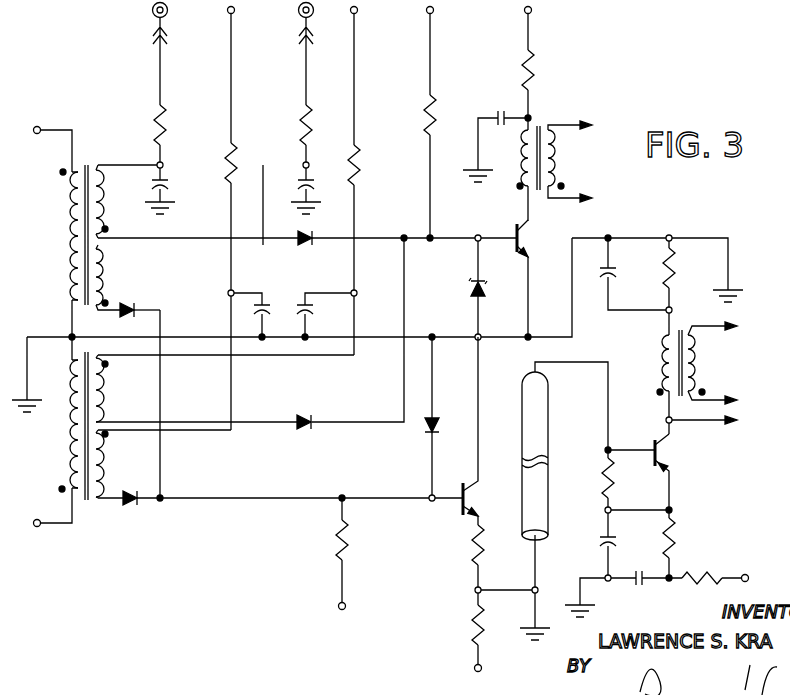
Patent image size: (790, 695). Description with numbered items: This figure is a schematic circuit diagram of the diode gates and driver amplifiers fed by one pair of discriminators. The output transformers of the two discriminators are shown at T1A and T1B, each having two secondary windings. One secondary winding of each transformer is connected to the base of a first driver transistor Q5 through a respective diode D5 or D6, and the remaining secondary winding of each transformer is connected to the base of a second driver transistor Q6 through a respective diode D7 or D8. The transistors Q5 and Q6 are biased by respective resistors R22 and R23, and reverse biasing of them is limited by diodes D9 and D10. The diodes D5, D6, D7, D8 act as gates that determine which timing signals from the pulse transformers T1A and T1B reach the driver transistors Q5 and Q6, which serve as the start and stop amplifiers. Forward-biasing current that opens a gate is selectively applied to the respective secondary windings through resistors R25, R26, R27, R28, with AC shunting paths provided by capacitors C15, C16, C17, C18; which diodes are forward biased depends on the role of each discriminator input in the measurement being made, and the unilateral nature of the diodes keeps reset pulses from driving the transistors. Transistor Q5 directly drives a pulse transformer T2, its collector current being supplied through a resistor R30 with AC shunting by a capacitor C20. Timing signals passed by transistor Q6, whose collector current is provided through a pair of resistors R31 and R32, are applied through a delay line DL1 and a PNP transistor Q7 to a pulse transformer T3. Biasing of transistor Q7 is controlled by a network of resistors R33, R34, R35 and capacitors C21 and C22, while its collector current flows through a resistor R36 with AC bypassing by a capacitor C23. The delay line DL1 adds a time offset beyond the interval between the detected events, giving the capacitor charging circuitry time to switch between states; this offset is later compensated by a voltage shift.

The output transformer T1A is at (84, 166).
The output transformer T1B is at (86, 495).
The pulse transformer T2 is at (543, 136).
The pulse transformer T3 is at (682, 335).
The resistor R22 is at (426, 112).
The resistor R23 is at (337, 550).
The resistor R25 is at (160, 112).
The resistor R26 is at (382, 134).
The resistor R27 is at (304, 110).
The resistor R28 is at (258, 134).
The resistor R30 is at (524, 74).
The resistor R31 is at (474, 550).
The resistor R32 is at (475, 627).
The resistor R33 is at (748, 569).
The resistor R34 is at (671, 548).
The resistor R35 is at (603, 496).
The resistor R36 is at (672, 295).
The capacitor C15 is at (151, 183).
The capacitor C16 is at (302, 300).
The capacitor C17 is at (310, 174).
The capacitor C18 is at (278, 278).
The capacitor C20 is at (498, 127).
The capacitor C21 is at (602, 540).
The capacitor C22 is at (638, 576).
The capacitor C23 is at (614, 273).
The diode D5 is at (311, 237).
The diode D6 is at (307, 419).
The diode D7 is at (140, 302).
The diode D8 is at (140, 503).
The diode D9 is at (472, 287).
The diode D10 is at (424, 432).
The first driver transistor Q5 is at (524, 246).
The second driver transistor Q6 is at (475, 480).
The PNP transistor Q7 is at (662, 468).
The delay line DL1 is at (548, 456).